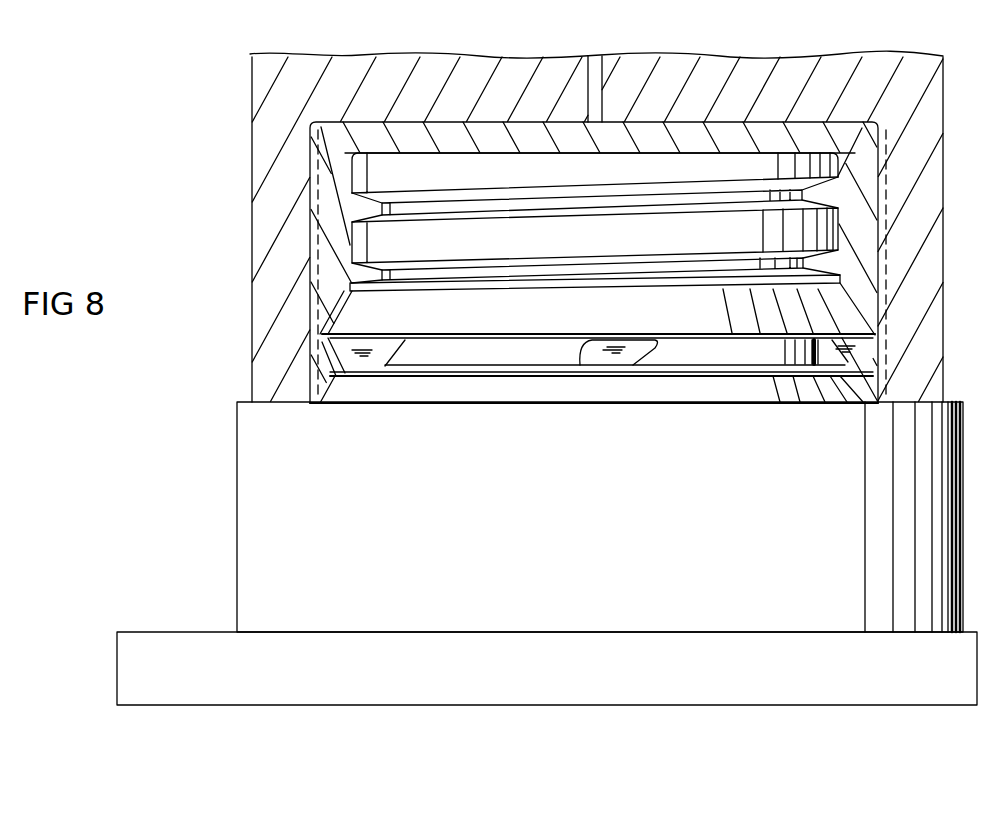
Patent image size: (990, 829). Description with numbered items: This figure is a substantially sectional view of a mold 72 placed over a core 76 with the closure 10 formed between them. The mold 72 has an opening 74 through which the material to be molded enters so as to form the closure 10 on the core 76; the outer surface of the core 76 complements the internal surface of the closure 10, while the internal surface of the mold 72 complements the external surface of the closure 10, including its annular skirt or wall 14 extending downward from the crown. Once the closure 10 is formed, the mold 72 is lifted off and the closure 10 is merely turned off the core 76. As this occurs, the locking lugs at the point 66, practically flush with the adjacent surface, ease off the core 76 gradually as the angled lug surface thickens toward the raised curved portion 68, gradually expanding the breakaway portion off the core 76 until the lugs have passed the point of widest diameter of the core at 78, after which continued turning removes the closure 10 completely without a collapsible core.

The closure 10 is at (813, 120).
The annular skirt or wall 14 is at (345, 228).
The point 66 is at (655, 340).
The raised curved portion 68 is at (836, 368).
The mold 72 is at (703, 55).
The opening 74 is at (600, 60).
The core 76 is at (349, 251).
The point of widest diameter of the core 78 is at (322, 337).